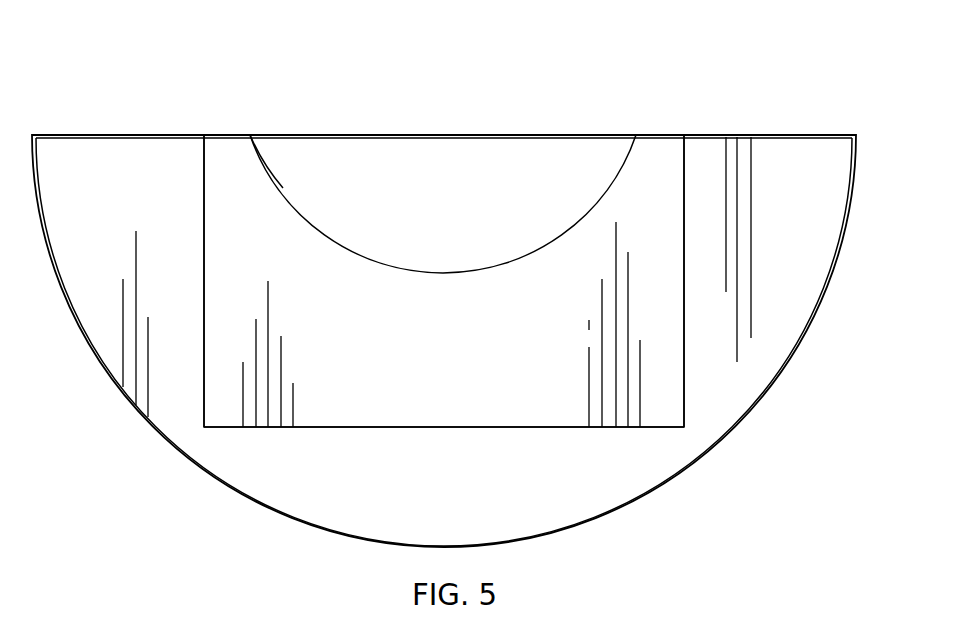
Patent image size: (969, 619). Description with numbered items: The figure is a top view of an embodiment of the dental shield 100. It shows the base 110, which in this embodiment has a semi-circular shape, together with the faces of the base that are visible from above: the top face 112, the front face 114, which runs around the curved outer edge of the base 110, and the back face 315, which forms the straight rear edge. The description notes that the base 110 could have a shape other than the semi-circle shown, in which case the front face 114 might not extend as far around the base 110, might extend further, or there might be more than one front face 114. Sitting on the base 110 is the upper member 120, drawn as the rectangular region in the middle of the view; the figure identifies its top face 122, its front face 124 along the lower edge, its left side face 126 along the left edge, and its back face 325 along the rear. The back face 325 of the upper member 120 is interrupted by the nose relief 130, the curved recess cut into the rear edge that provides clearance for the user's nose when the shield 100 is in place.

The shield 100 is at (264, 66).
The base 110 is at (748, 360).
The top face 112 is at (805, 231).
The front face 114 is at (666, 484).
The upper member 120 is at (658, 186).
The top face 122 is at (543, 366).
The front face 124 is at (438, 428).
The left side face 126 is at (203, 228).
The nose relief 130 is at (421, 242).
The back face 315 is at (133, 135).
The back face 325 is at (283, 188).